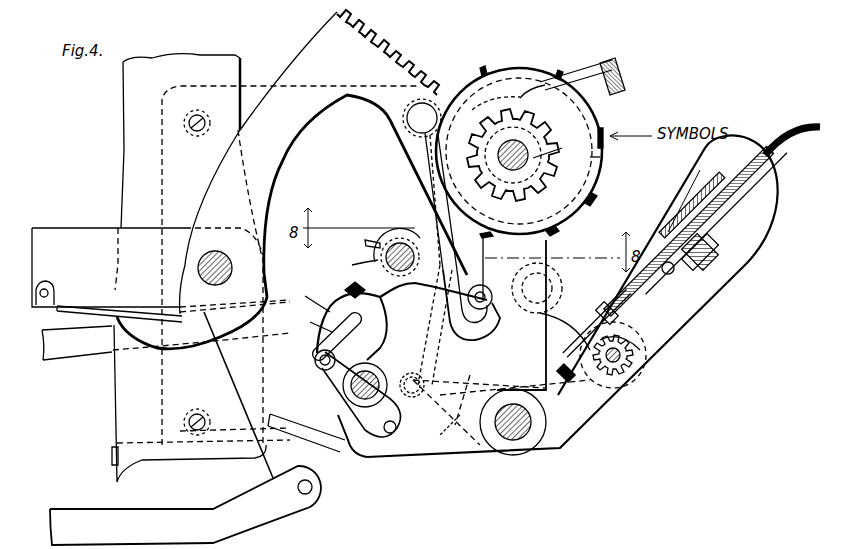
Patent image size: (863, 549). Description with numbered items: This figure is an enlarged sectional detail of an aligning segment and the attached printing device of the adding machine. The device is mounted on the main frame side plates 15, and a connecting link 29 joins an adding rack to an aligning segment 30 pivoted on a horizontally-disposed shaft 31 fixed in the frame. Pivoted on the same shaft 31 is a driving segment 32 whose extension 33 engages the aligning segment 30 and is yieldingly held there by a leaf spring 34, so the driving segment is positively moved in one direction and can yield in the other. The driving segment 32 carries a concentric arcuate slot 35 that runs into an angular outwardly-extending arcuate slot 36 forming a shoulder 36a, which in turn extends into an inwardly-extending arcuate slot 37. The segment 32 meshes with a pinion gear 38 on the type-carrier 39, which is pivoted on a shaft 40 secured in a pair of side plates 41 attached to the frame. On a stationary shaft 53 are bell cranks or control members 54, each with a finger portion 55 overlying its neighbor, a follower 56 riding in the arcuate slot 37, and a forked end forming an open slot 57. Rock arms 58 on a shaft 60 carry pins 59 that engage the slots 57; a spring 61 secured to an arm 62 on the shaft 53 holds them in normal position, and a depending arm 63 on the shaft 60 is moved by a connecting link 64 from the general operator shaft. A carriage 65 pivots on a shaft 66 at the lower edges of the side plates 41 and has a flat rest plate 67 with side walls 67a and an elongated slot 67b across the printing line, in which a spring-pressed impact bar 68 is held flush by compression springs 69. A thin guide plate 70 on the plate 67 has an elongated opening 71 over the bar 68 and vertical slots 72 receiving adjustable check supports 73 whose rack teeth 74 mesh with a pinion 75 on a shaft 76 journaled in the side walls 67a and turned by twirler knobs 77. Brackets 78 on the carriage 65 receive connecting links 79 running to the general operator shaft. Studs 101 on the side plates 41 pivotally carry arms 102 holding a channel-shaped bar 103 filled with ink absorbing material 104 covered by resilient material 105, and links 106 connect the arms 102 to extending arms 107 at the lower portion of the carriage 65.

The main frame side plates 15 is at (126, 118).
The aligning segment 30 is at (84, 236).
The leaf spring 34 is at (96, 307).
The connecting links 79 is at (100, 343).
The connecting link 29 is at (162, 513).
The connecting link 64 is at (113, 450).
The side plates 41 is at (445, 458).
The driving segment 32 is at (292, 58).
The studs or shafts 101 is at (428, 103).
The arms 102 is at (485, 100).
The type-carrier 39 is at (590, 125).
The shaft 40 is at (558, 148).
The pinion gear 38 is at (600, 159).
The concentric arcuate slot 35 is at (500, 213).
The resilient material 105 is at (607, 62).
The channel-shaped bar 103 is at (627, 72).
The ink absorbing material 104 is at (622, 92).
The spring 61 is at (378, 243).
The arm 62 is at (367, 241).
The outwardly-extending arcuate slot 36 is at (455, 307).
The shoulder 36a is at (486, 290).
The inwardly-extending arcuate slot 37 is at (468, 326).
The follower 56 is at (490, 303).
The shaft 53 is at (358, 262).
The finger portion 55 is at (345, 288).
The bell crank or control member 54 is at (308, 296).
The open slot 57 is at (311, 321).
The shaft 31 is at (240, 268).
The extension 33 is at (219, 395).
The rock arms 58 is at (334, 360).
The pins 59 is at (323, 366).
The shaft 60 is at (373, 372).
The depending arm 63 is at (397, 411).
The links 106 is at (422, 366).
The extending arms 107 is at (440, 430).
The shaft 66 is at (521, 437).
The extending arms or brackets 78 is at (580, 313).
The rest portion or plate 67 is at (780, 143).
The side walls 67a is at (750, 243).
The elongated slot opening 67b is at (678, 222).
The guide plate 70 is at (713, 187).
The cushion or impact bar 68 is at (705, 241).
The elongated opening 71 is at (674, 233).
The compression springs 69 is at (687, 265).
The vertically-extending slots 72 is at (675, 290).
The carriage 65 is at (645, 332).
The rack teeth 74 is at (660, 350).
The twirler knobs 77 is at (650, 365).
The pinion 75 is at (625, 372).
The shaft 76 is at (628, 387).
The adjustable guide or check support 73 is at (608, 397).